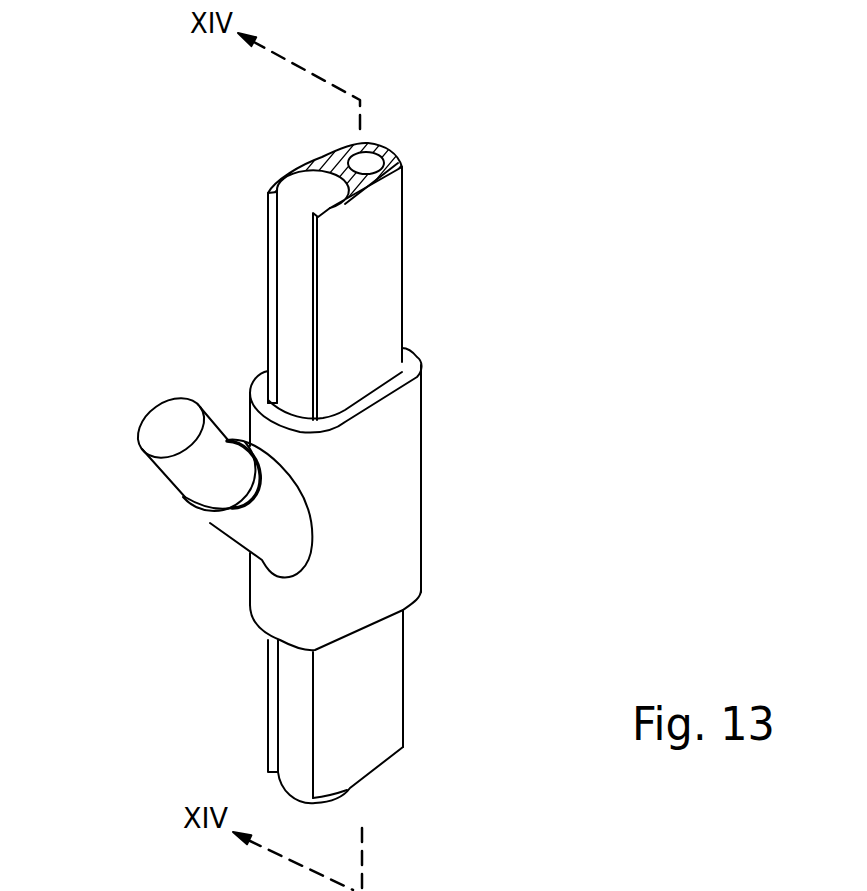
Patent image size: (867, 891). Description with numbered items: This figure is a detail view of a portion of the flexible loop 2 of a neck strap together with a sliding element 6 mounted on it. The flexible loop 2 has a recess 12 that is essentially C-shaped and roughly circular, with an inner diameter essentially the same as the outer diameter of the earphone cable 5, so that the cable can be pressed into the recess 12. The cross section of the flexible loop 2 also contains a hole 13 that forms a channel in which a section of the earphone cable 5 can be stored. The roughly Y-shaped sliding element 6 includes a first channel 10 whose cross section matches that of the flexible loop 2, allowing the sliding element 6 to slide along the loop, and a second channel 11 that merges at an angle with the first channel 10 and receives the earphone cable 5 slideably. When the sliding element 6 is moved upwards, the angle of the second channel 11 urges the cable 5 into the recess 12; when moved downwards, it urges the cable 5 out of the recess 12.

The flexible loop 2 is at (385, 232).
The earphone cable 5 is at (157, 413).
The sliding element 6 is at (408, 442).
The first channel 10 is at (378, 383).
The second channel 11 is at (205, 502).
The recess 12 is at (293, 218).
The hole 13 is at (365, 153).